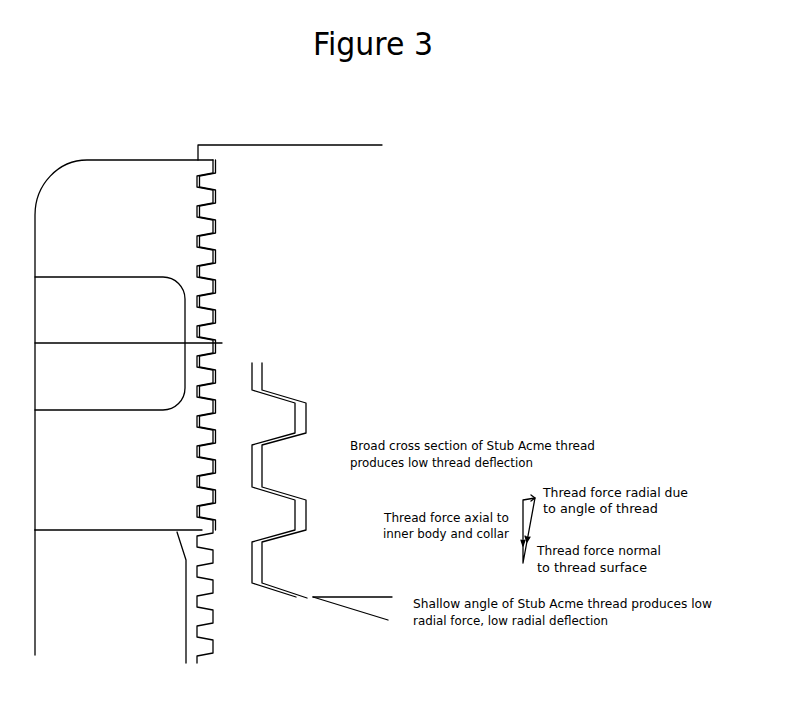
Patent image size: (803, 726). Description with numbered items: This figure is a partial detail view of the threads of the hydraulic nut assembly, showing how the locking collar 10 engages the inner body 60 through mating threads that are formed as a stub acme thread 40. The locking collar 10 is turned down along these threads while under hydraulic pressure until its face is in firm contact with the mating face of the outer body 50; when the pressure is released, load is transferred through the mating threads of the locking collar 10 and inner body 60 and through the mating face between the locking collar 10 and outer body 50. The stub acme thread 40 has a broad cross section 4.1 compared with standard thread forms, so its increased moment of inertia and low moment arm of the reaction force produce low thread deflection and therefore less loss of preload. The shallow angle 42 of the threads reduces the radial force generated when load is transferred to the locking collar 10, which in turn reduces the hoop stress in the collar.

The locking collar 10 is at (128, 345).
The stub acme thread 40 is at (207, 160).
The outer body 50 is at (118, 596).
The inner body 60 is at (290, 337).
The shallow angle 42 is at (387, 632).
The broad cross section 4.1 is at (318, 435).